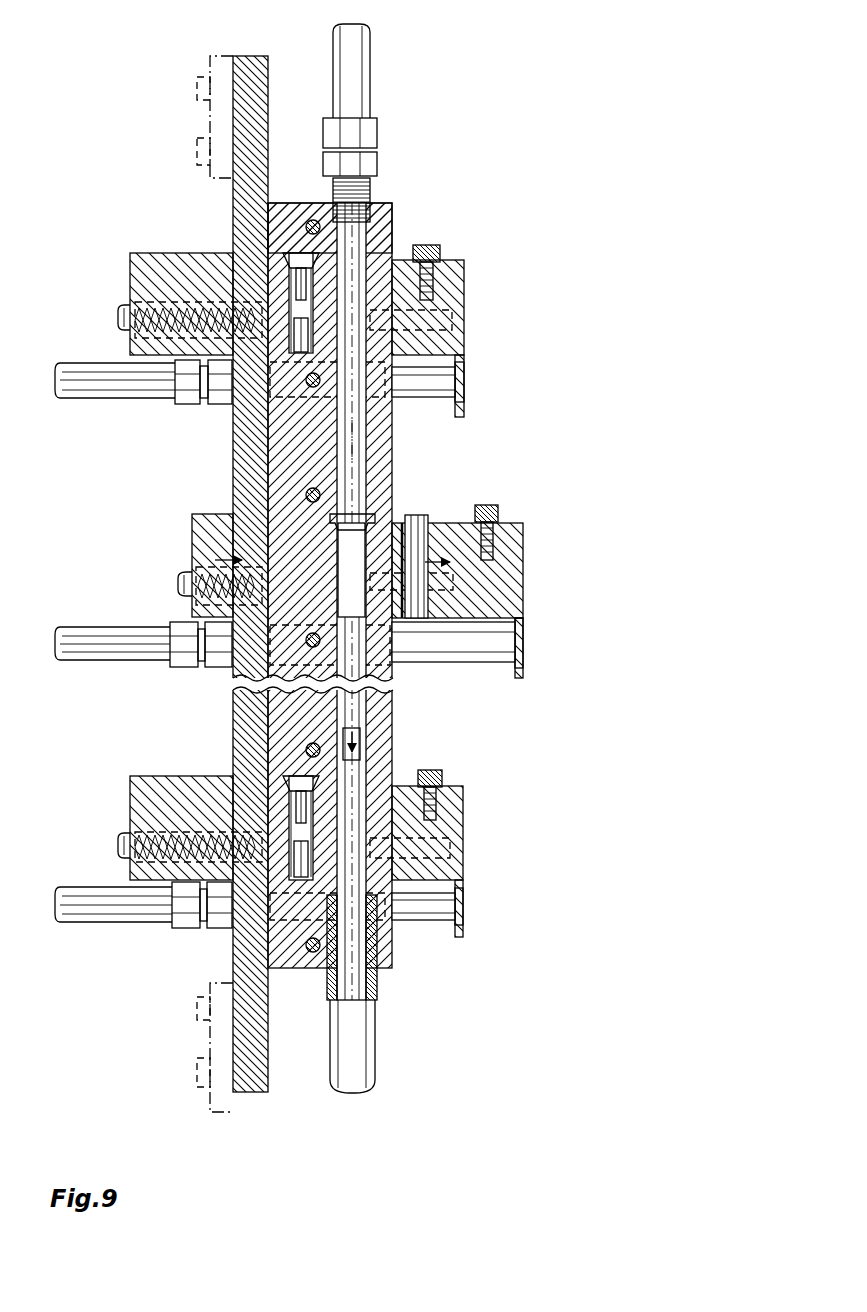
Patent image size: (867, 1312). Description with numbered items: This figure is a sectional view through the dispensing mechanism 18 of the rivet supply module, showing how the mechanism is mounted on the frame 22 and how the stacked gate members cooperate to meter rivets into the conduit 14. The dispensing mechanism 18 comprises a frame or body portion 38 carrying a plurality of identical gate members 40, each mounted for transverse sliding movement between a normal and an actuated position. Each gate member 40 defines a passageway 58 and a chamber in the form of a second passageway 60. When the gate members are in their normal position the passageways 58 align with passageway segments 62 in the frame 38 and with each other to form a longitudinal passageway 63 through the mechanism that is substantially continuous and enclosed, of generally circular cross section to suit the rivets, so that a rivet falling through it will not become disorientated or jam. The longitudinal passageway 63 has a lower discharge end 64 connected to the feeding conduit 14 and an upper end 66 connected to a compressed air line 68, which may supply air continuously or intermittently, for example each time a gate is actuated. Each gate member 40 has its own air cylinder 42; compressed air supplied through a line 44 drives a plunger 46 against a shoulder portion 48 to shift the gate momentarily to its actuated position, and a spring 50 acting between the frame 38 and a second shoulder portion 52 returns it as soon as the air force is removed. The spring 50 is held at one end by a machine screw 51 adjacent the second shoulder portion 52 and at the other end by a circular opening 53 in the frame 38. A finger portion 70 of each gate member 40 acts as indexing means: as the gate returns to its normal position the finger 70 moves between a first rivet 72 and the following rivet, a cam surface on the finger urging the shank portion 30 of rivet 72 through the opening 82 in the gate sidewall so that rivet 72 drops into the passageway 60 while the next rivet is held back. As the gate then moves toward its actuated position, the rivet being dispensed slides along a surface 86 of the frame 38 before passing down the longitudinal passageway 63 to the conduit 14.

The conduit 14 is at (360, 1050).
The dispensing mechanism 18 is at (460, 990).
The frame 22 is at (210, 118).
The shank portion 30 is at (378, 252).
The frame or body portion 38 is at (393, 450).
The gate member 40 is at (465, 292).
The air cylinder 42 is at (203, 410).
The line 44 is at (88, 385).
The plunger 46 is at (436, 386).
The shoulder portion 48 is at (467, 397).
The spring 50 is at (158, 245).
The machine screw 51 is at (120, 317).
The second shoulder portion 52 is at (130, 262).
The circular opening 53 is at (207, 252).
The passageway 58 is at (357, 307).
The passageway 60 is at (366, 262).
The passageway segments 62 is at (290, 248).
The longitudinal passageway 63 is at (352, 433).
The lower discharge end 64 is at (374, 970).
The upper end 66 is at (330, 227).
The compressed air line 68 is at (352, 56).
The finger portion 70 is at (283, 250).
The first rivet 72 is at (295, 272).
The opening 82 is at (302, 313).
The surface 86 is at (327, 347).